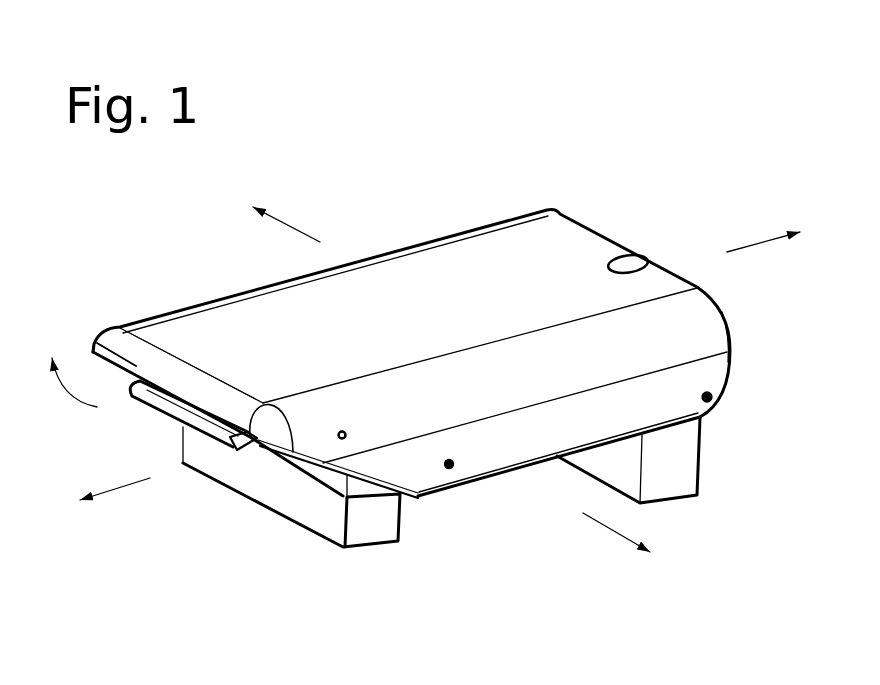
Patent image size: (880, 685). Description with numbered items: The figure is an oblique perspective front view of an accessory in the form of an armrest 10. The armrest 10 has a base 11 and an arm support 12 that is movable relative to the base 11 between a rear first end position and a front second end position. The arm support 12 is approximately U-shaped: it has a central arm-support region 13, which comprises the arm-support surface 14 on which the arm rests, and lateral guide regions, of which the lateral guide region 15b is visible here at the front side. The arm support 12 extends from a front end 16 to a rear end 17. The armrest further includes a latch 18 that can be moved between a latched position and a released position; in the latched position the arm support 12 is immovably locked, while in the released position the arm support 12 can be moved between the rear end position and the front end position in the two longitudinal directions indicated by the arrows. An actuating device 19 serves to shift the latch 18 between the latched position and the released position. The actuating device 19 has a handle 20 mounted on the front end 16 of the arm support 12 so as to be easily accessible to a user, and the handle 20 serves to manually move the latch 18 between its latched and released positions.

The armrest 10 is at (703, 166).
The base 11 is at (318, 507).
The arm support 12 is at (214, 338).
The central arm-support region 13 is at (464, 274).
The arm-support surface 14 is at (532, 240).
The lateral guide region 15b is at (510, 445).
The front end 16 is at (138, 350).
The rear end 17 is at (584, 235).
The latch 18 is at (132, 412).
The actuating device 19 is at (243, 455).
The handle 20 is at (216, 435).